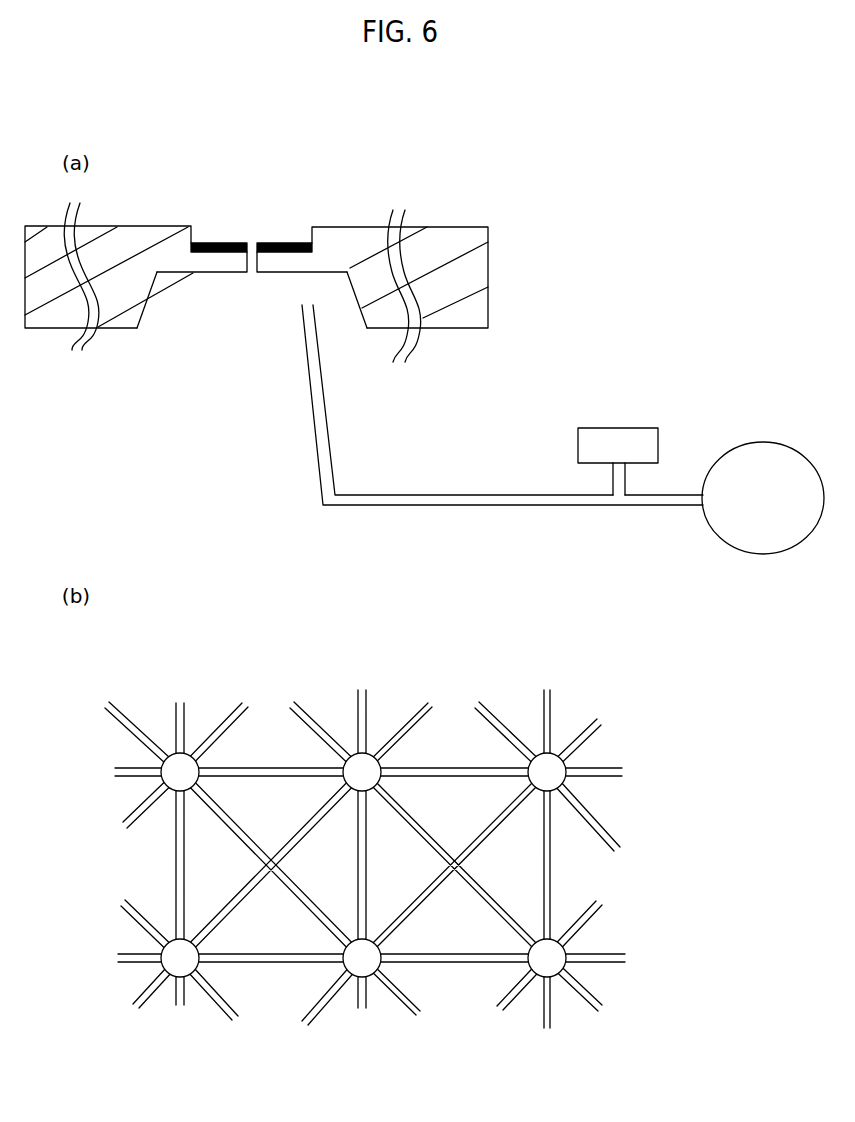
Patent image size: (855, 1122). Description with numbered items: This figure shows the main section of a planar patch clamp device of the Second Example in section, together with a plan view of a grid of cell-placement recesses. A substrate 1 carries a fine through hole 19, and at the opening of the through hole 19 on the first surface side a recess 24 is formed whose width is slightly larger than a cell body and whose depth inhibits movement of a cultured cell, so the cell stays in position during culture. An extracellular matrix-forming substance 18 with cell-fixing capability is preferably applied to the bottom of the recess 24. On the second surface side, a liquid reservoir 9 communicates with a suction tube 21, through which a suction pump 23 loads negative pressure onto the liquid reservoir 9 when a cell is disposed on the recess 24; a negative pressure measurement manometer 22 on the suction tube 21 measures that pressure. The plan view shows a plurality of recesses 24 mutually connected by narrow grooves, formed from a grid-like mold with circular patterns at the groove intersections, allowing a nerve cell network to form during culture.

The substrate 1 is at (422, 282).
The liquid reservoir on the second surface side 9 is at (235, 303).
The extracellular matrix-forming substance 18 is at (213, 255).
The through hole 19 is at (247, 262).
The suction tube 21 is at (457, 498).
The negative pressure measurement manometer 22 is at (602, 440).
The suction pump 23 is at (747, 518).
The recess 24 is at (290, 238).